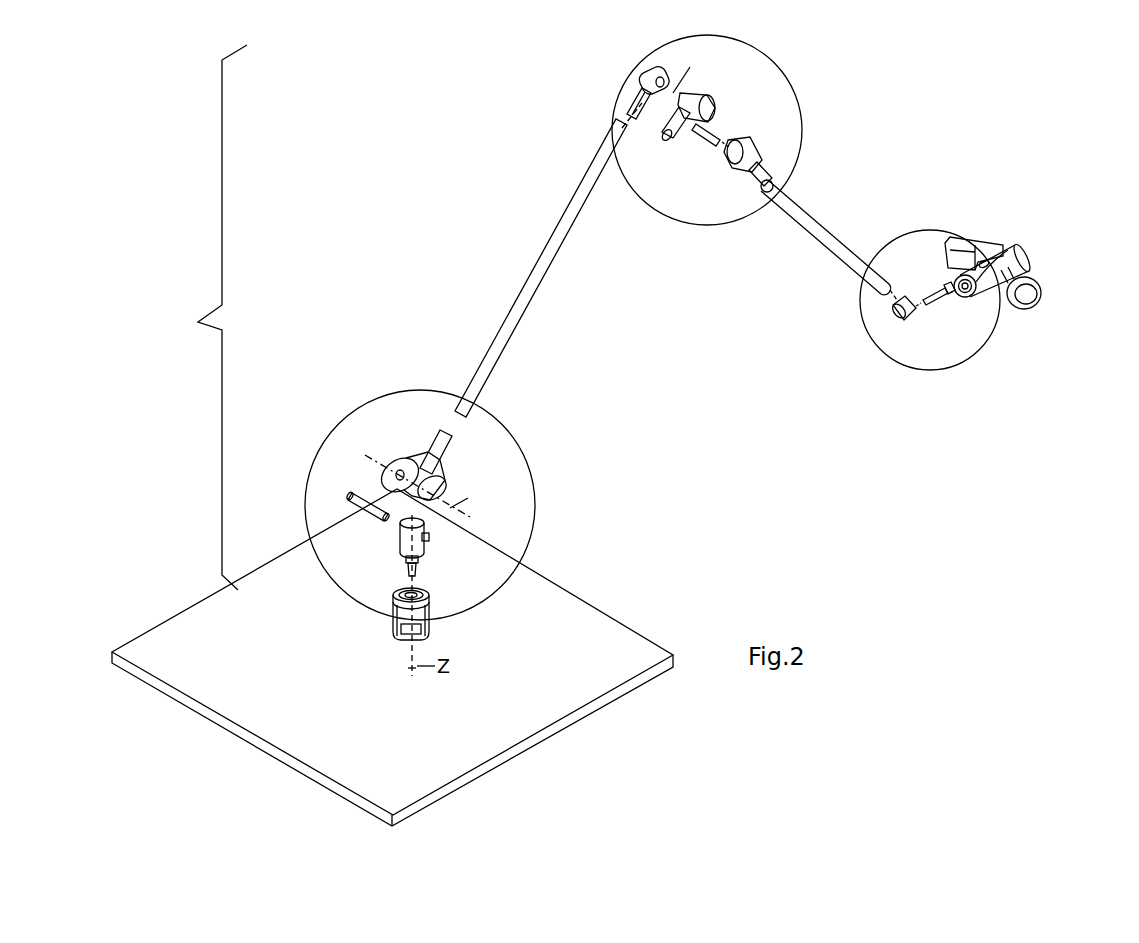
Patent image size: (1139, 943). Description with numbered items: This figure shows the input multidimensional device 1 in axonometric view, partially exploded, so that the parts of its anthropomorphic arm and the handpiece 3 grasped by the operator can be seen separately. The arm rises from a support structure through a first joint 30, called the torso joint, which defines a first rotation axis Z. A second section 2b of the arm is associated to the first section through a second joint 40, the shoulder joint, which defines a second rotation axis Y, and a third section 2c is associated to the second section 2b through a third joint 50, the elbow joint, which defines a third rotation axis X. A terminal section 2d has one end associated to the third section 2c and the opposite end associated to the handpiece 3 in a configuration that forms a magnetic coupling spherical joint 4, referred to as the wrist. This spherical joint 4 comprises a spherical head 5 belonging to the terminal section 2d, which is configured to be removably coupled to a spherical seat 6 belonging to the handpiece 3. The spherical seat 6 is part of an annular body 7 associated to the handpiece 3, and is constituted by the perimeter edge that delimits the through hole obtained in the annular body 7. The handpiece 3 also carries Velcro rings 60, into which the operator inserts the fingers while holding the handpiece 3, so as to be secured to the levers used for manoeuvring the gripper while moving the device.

The input multidimensional device 1 is at (198, 322).
The second section 2b is at (546, 306).
The third section 2c is at (815, 203).
The terminal section 2d is at (932, 317).
The handpiece 3 is at (1006, 253).
The spherical joint 4 is at (898, 367).
The spherical head 5 is at (951, 303).
The spherical seat 6 is at (958, 284).
The annular body 7 is at (972, 291).
The first joint 30 is at (386, 633).
The second joint 40 is at (511, 483).
The third joint 50 is at (769, 56).
The Velcro rings 60 is at (948, 237).